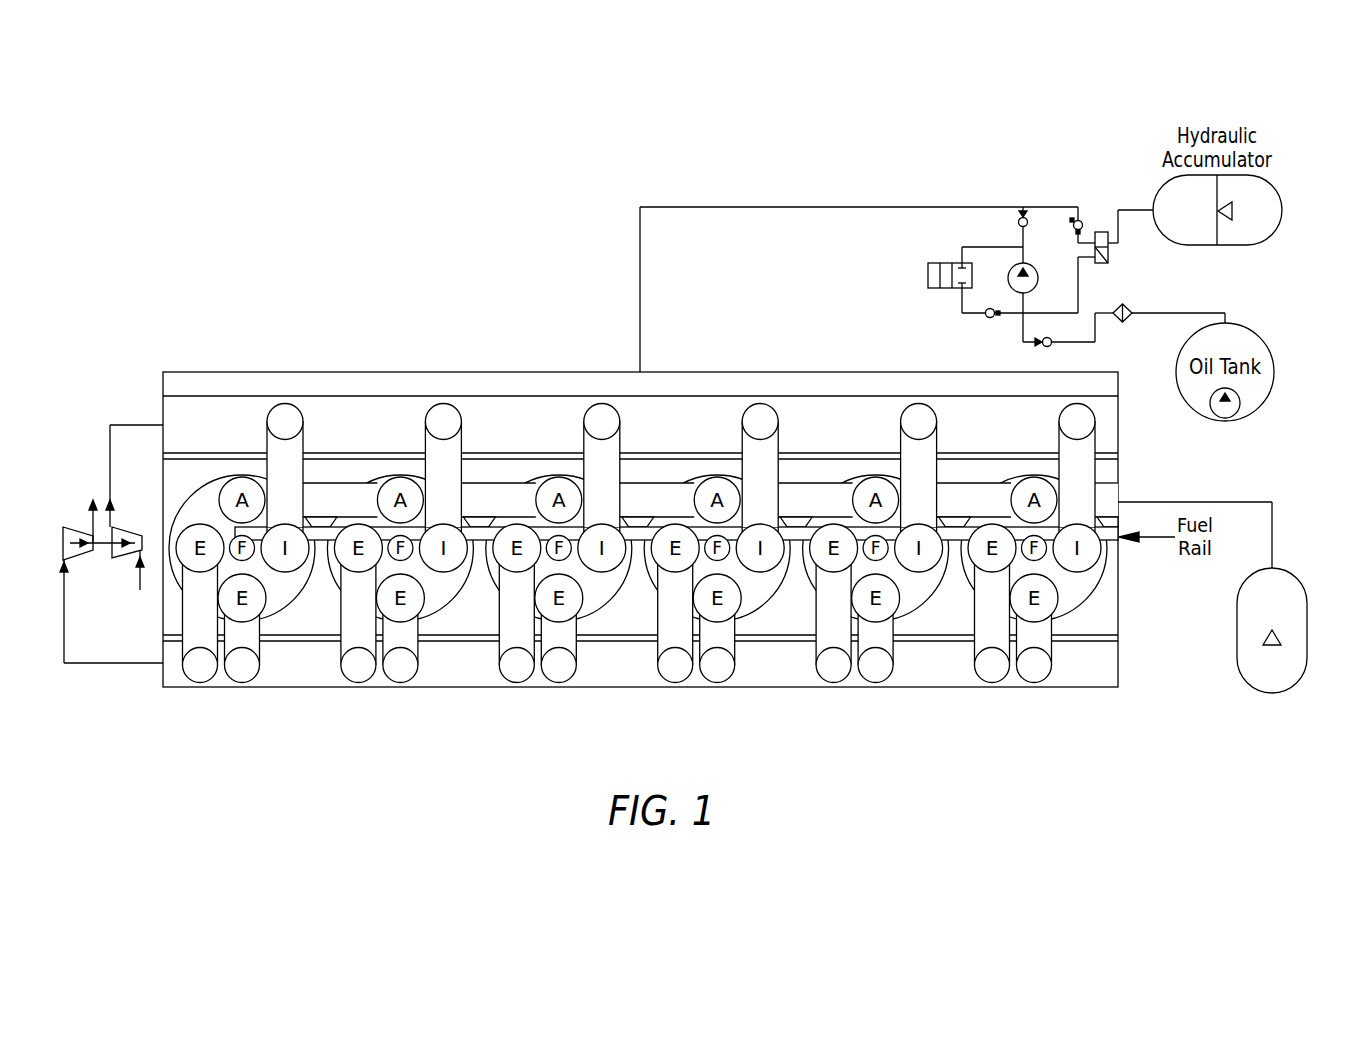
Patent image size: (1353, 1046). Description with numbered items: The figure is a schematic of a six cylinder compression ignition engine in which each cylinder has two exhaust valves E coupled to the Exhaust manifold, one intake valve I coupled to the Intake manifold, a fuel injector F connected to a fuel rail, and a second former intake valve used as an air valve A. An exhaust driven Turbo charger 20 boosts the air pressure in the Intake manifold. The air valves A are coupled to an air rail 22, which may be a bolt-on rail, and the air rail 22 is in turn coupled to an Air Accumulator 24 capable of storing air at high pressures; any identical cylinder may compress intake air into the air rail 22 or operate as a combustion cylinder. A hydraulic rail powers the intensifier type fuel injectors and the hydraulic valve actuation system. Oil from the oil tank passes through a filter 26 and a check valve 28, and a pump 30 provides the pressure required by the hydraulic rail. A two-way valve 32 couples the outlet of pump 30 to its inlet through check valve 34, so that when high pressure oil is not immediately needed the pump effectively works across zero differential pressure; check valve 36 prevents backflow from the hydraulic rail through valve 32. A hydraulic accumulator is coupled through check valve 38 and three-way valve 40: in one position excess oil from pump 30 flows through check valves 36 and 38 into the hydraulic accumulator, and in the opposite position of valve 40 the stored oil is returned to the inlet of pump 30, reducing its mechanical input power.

The turbo charger 20 is at (80, 528).
The air rail 22 is at (805, 497).
The Air Accumulator 24 is at (1292, 572).
The filter 26 is at (1124, 322).
The check valve 28 is at (1043, 344).
The pump 30 is at (1010, 272).
The two-way valve 32 is at (932, 262).
The check valve 34 is at (987, 318).
The check valve 36 is at (1028, 218).
The check valve 38 is at (1082, 226).
The three-way valve 40 is at (1108, 253).